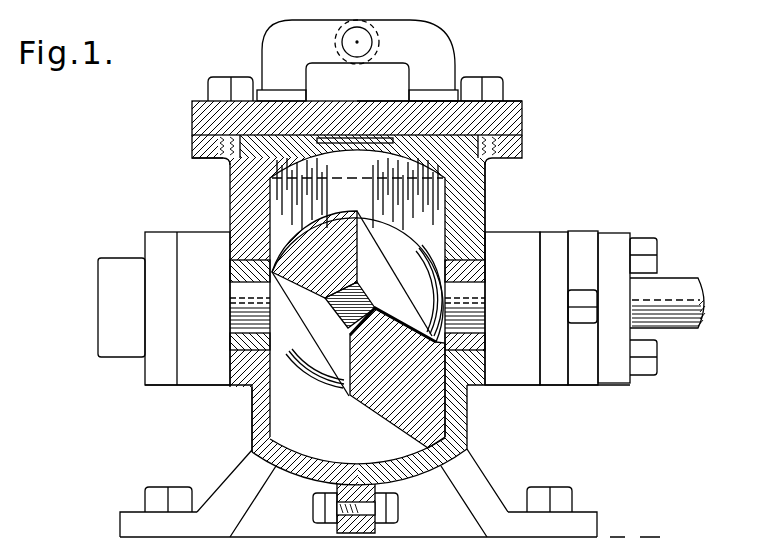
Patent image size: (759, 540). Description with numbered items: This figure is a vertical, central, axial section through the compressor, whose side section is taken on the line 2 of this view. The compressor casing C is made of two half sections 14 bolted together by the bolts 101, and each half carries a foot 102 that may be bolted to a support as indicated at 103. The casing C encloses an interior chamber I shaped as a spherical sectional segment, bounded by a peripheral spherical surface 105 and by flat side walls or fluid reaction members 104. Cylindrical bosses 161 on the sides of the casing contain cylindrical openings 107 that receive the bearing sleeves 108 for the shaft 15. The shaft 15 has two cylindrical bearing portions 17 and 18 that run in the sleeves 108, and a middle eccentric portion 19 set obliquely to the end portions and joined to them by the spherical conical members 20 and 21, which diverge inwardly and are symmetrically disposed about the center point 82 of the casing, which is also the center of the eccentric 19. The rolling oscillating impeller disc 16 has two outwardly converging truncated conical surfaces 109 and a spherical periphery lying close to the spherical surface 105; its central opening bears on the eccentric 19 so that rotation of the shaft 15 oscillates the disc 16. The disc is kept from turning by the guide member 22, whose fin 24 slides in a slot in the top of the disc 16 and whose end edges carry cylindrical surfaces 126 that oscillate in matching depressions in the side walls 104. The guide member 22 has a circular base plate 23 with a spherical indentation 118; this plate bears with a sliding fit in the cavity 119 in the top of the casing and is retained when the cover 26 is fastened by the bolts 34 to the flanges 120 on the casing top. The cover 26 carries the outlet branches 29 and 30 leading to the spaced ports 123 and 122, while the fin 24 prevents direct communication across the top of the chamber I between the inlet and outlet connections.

The section line 2 is at (352, 8).
The outlet pipe branch 29 is at (283, 50).
The outlet pipe branch 30 is at (442, 68).
The truncated conical surfaces 109 is at (330, 180).
The interior chamber I is at (445, 200).
The bolts 34 is at (217, 90).
The cover 26 is at (523, 116).
The port 122 is at (420, 110).
The guide member 22 is at (523, 151).
The flanges 120 is at (195, 146).
The cavity 119 is at (220, 157).
The port 123 is at (287, 129).
The indentation of spherical contour 118 is at (408, 140).
The circular base plate 23 is at (265, 163).
The half sections 14 is at (473, 220).
The fin 24 is at (290, 207).
The cylindrical surfaces 126 is at (265, 238).
The cylindrical bearing portion 18 is at (240, 302).
The cylindrical bearing portion 17 is at (473, 298).
The cylindrical openings 107 is at (500, 360).
The bearing sleeves 108 is at (230, 343).
The cylindrical bosses 161 is at (183, 320).
The shaft 15 is at (680, 286).
The flat side walls 104 is at (270, 402).
The casing C is at (246, 431).
The peripheral spherical surface 105 is at (308, 470).
The bolts 101 is at (312, 512).
The foot 102 is at (198, 510).
The support bolting 103 is at (177, 488).
The spherical conical member 20 is at (395, 235).
The eccentric portion 19 is at (357, 297).
The center point 82 is at (353, 308).
The impeller disc 16 is at (380, 402).
The spherical conical member 21 is at (298, 360).